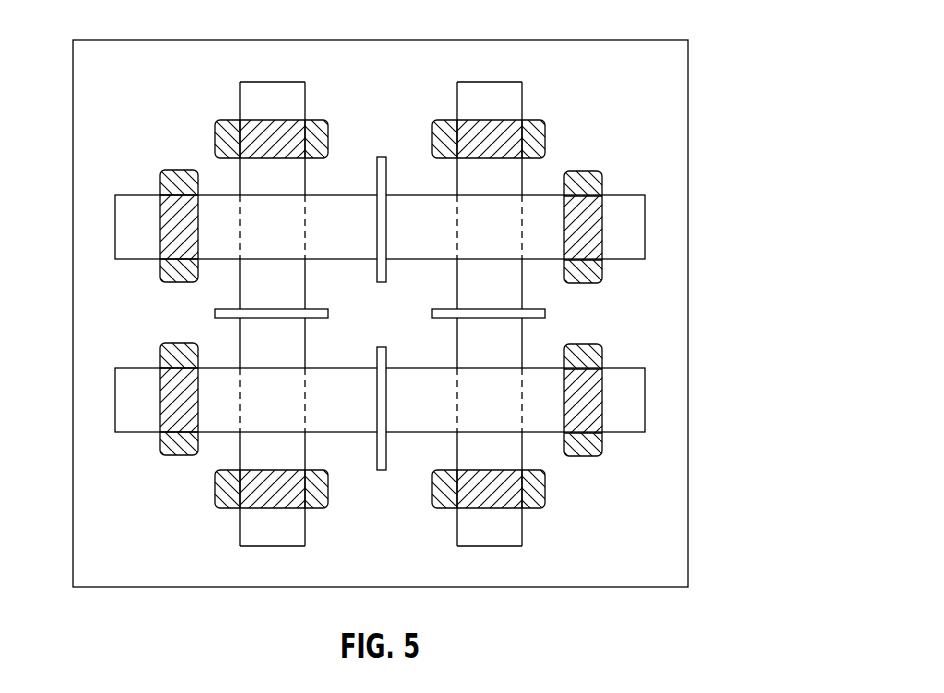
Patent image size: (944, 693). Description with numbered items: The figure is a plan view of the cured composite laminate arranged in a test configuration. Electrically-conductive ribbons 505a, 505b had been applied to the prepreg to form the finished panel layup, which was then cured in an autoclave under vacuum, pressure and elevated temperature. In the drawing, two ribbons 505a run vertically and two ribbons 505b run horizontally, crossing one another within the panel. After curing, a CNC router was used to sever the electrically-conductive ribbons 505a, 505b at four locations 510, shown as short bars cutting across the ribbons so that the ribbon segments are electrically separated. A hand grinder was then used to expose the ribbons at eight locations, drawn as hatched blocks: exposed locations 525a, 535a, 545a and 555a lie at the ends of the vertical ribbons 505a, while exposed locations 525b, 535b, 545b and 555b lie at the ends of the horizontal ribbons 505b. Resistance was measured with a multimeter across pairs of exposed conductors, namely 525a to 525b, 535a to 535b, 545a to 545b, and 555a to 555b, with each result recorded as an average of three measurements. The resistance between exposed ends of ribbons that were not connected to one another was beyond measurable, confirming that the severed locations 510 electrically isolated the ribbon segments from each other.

The electrically-conductive ribbon 505a is at (289, 73).
The electrically-conductive ribbon 505b is at (653, 271).
The sever location 510 is at (382, 156).
The exposed location 525a is at (268, 138).
The exposed location 525b is at (190, 208).
The exposed location 535a is at (260, 490).
The exposed location 535b is at (190, 388).
The exposed location 545a is at (498, 138).
The exposed location 545b is at (576, 212).
The exposed location 555a is at (500, 490).
The exposed location 555b is at (578, 388).